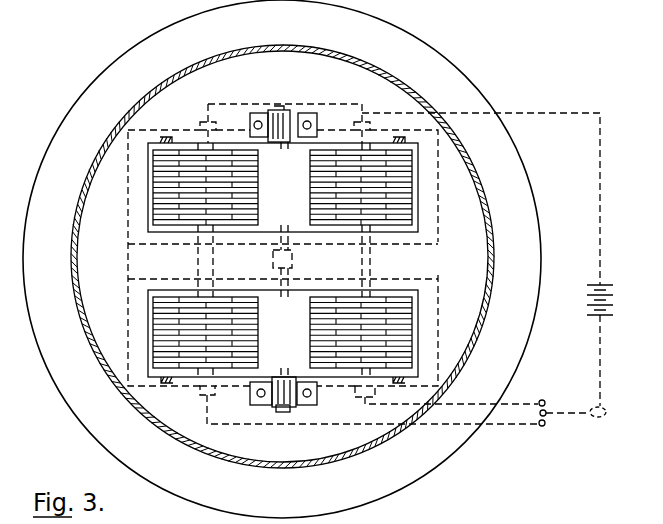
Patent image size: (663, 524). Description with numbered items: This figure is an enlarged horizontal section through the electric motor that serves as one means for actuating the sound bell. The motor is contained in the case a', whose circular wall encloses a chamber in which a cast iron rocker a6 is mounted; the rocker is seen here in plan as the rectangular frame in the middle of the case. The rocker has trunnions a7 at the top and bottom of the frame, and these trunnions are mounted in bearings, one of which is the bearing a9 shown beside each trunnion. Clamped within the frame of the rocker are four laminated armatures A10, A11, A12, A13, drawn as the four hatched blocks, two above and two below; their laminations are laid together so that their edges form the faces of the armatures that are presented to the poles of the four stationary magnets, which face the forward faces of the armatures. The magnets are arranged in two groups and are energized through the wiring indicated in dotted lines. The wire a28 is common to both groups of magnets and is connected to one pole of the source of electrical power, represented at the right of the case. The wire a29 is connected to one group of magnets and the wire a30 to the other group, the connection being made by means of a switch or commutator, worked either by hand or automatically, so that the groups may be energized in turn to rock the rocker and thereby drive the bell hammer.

The case a' is at (301, 257).
The rocker a6 is at (153, 260).
The trunnions a7 is at (279, 111).
The bearing a9 is at (306, 123).
The laminated armature A10 is at (198, 362).
The laminated armature A11 is at (412, 323).
The laminated armature A12 is at (412, 208).
The laminated armature A13 is at (155, 192).
The wire a28 is at (500, 259).
The wire a29 is at (376, 423).
The wire a30 is at (468, 404).